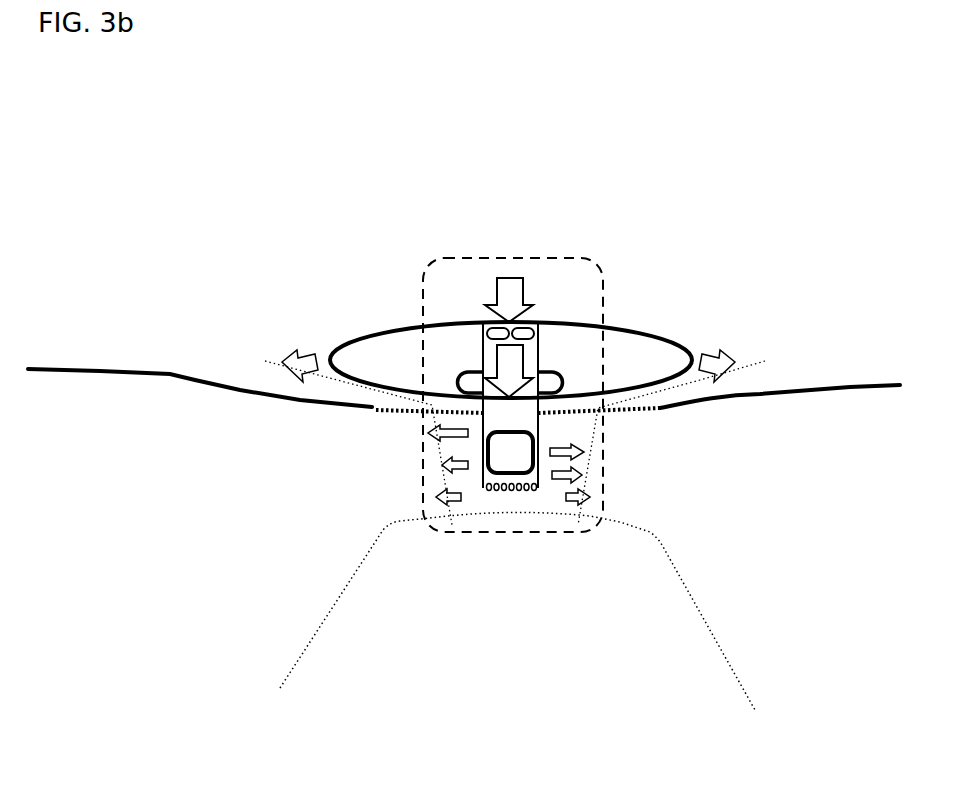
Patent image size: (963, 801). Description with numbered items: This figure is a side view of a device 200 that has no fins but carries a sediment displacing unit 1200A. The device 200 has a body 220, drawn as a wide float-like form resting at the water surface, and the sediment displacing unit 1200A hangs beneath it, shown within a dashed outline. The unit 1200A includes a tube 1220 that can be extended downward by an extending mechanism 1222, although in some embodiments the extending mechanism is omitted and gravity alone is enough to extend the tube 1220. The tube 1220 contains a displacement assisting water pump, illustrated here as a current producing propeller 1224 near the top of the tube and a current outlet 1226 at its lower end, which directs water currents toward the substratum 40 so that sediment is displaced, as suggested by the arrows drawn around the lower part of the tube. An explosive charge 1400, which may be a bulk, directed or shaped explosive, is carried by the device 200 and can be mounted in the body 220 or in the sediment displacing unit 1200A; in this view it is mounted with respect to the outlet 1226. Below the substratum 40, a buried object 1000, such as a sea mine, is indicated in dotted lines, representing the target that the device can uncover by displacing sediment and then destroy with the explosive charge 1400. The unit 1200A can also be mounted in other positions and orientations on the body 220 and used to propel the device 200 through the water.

The substratum 40 is at (197, 377).
The device 200 is at (705, 137).
The body 220 is at (358, 334).
The buried object 1000 is at (363, 600).
The sediment displacing unit 1200A is at (553, 257).
The tube 1220 is at (542, 427).
The extending mechanism 1222 is at (568, 383).
The current producing propeller 1224 is at (482, 334).
The current outlet 1226 is at (482, 486).
The explosive charge 1400 is at (482, 448).